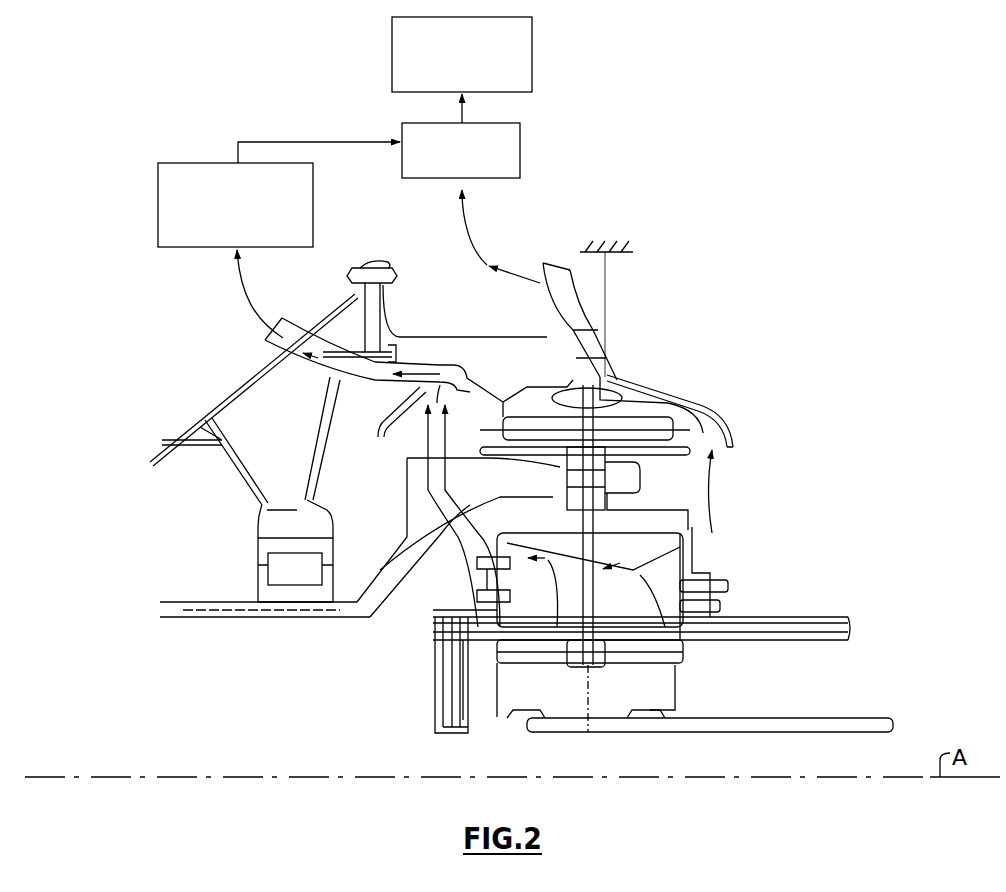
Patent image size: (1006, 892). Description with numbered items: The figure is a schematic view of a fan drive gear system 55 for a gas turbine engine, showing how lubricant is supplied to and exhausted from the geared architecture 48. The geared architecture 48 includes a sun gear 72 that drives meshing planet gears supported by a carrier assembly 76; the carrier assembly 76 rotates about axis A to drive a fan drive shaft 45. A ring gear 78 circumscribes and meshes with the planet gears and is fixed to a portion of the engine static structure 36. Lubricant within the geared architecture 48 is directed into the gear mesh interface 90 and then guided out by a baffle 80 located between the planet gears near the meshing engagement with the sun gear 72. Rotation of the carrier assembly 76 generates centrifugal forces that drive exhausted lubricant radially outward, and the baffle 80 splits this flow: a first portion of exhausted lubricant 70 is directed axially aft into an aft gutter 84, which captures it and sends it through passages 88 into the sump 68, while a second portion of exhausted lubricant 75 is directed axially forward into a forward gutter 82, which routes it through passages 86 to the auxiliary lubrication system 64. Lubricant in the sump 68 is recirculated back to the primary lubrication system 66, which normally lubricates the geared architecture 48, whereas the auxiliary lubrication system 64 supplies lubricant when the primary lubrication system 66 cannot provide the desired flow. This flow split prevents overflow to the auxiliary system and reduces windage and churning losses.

The engine static structure 36 is at (633, 252).
The fan drive shaft 45 is at (255, 608).
The geared architecture 48 is at (353, 663).
The fan drive gear system 55 is at (350, 557).
The auxiliary lubrication system 64 is at (196, 248).
The primary lubrication system 66 is at (532, 54).
The sump 68 is at (520, 157).
The first portion of exhausted lubricant 70 is at (722, 478).
The sun gear 72 is at (526, 700).
The second portion of exhausted lubricant 75 is at (470, 541).
The carrier assembly 76 is at (687, 527).
The ring gear 78 is at (650, 410).
The baffle 80 is at (665, 573).
The forward gutter 82 is at (478, 380).
The aft gutter 84 is at (714, 398).
The passages 86 is at (292, 318).
The passages 88 is at (557, 272).
The gear mesh interface 90 is at (690, 654).